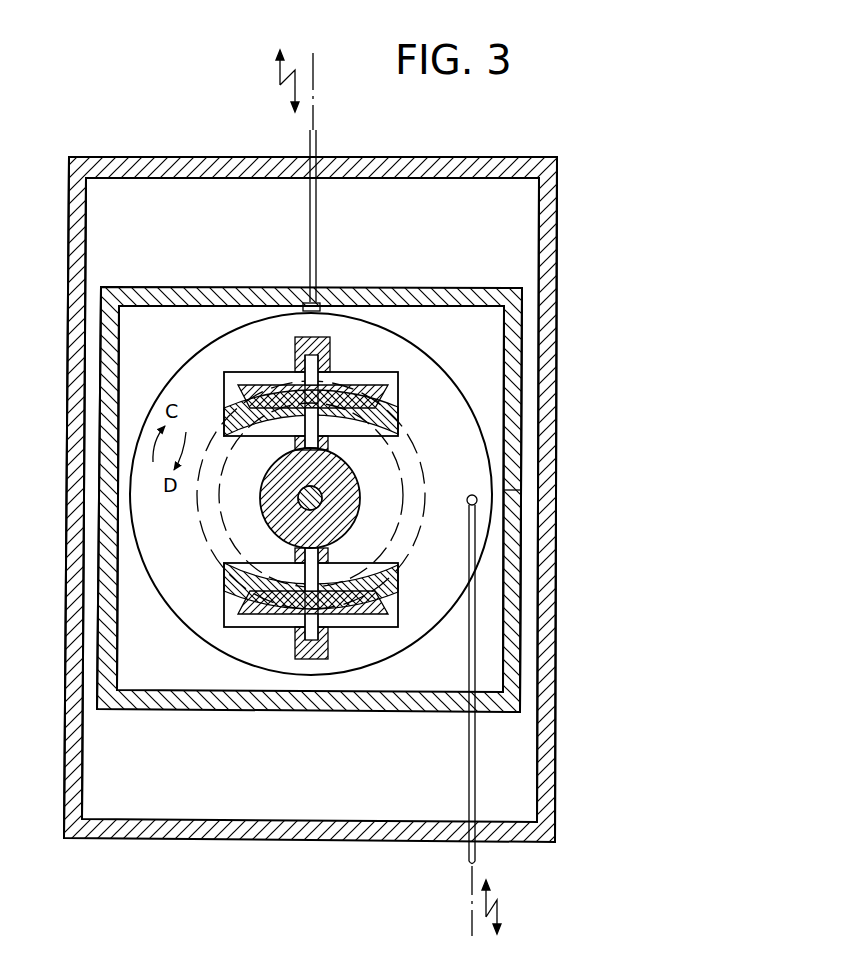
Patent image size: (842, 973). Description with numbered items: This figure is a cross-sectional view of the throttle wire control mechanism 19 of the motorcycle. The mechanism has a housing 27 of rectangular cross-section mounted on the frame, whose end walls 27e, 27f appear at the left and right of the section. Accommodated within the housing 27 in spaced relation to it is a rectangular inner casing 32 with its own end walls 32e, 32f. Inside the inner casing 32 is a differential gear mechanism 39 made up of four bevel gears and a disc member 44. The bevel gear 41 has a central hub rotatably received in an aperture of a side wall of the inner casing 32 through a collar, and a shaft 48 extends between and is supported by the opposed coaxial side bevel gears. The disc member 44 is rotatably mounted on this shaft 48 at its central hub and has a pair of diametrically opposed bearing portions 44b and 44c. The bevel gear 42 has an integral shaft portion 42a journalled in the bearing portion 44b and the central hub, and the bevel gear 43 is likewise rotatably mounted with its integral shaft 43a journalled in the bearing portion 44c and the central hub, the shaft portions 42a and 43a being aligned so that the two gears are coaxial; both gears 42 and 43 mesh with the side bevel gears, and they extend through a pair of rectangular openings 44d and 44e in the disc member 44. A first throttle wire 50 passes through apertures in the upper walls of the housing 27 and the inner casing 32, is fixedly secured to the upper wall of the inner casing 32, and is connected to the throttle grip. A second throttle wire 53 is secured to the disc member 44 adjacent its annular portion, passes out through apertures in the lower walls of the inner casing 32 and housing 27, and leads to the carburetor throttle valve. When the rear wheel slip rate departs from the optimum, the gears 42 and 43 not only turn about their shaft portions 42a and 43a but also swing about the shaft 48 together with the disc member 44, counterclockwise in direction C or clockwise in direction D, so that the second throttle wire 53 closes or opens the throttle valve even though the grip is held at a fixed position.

The throttle wire control mechanism 19 is at (100, 153).
The housing 27 is at (557, 243).
The end wall 27e is at (65, 633).
The end wall 27f is at (556, 632).
The inner casing 32 is at (503, 415).
The end wall 32e is at (100, 490).
The end wall 32f is at (522, 490).
The differential gear mechanism 39 is at (172, 377).
The bevel gear 41 is at (380, 430).
The bevel gear 42 is at (355, 388).
The shaft portion 42a is at (300, 382).
The bevel gear 43 is at (278, 606).
The shaft 43a is at (322, 612).
The disc member 44 is at (162, 575).
The bearing portion 44b is at (328, 342).
The bearing portion 44c is at (330, 552).
The rectangular opening 44d is at (224, 378).
The rectangular opening 44e is at (238, 626).
The shaft 48 is at (322, 499).
The first throttle wire 50 is at (318, 78).
The second throttle wire 53 is at (468, 910).